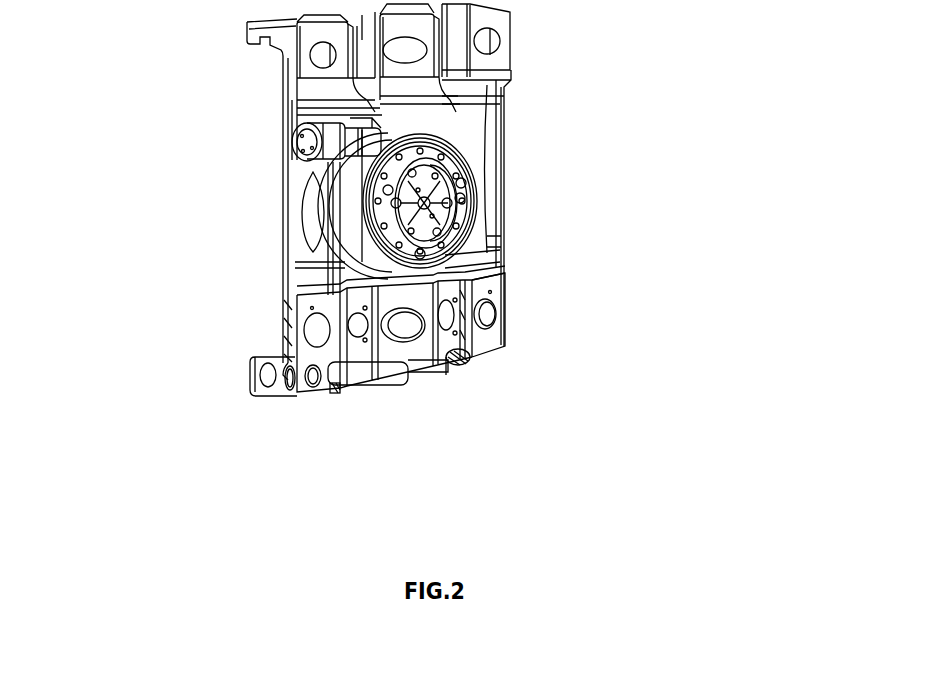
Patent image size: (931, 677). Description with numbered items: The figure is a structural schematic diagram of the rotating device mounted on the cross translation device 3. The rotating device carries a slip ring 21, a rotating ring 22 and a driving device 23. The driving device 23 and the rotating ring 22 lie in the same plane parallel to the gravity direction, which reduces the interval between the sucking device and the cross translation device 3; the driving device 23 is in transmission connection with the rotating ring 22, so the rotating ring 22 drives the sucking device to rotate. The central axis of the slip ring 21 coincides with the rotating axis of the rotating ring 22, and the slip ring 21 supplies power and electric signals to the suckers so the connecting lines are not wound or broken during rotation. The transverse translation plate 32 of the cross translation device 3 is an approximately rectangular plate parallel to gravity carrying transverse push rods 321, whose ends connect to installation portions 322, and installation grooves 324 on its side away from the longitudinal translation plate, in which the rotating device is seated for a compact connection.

The cross translation device 3 is at (505, 68).
The slip ring 21 is at (453, 200).
The rotating ring 22 is at (448, 225).
The driving device 23 is at (290, 135).
The transverse translation plate 32 is at (488, 340).
The transverse push rod 321 is at (370, 373).
The installation portion 322 is at (267, 395).
The installation groove 324 is at (505, 272).